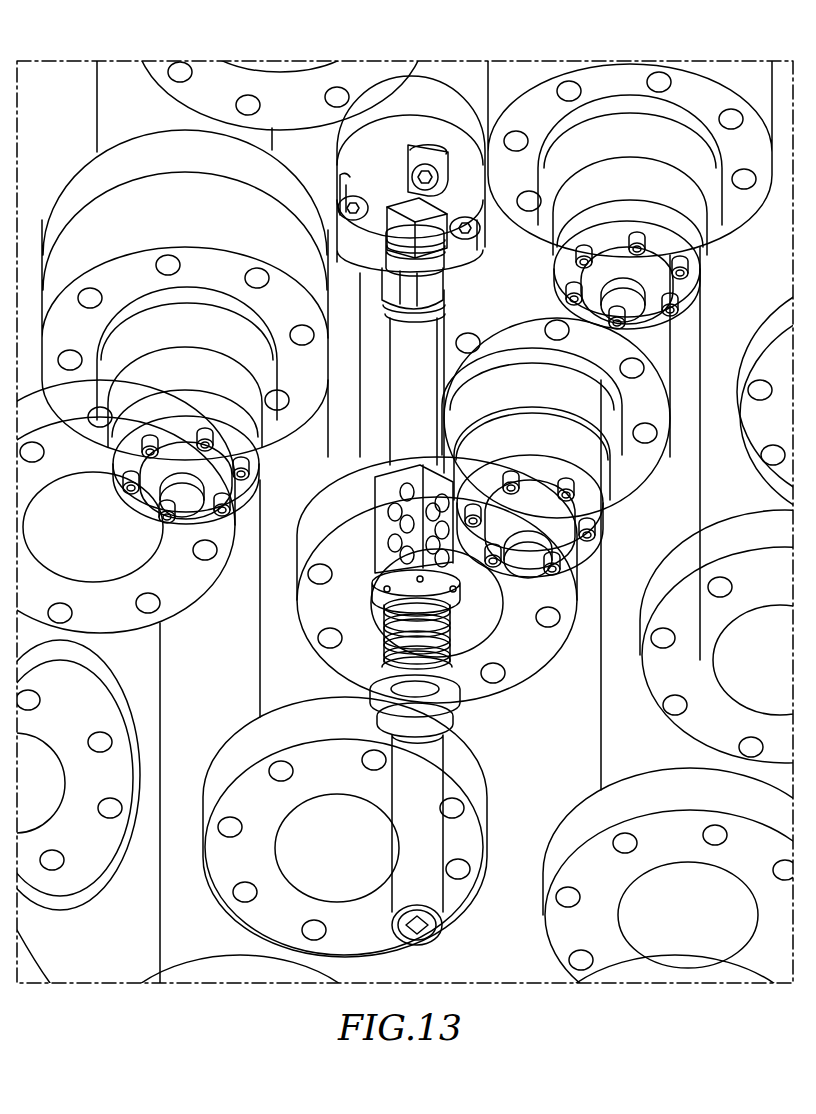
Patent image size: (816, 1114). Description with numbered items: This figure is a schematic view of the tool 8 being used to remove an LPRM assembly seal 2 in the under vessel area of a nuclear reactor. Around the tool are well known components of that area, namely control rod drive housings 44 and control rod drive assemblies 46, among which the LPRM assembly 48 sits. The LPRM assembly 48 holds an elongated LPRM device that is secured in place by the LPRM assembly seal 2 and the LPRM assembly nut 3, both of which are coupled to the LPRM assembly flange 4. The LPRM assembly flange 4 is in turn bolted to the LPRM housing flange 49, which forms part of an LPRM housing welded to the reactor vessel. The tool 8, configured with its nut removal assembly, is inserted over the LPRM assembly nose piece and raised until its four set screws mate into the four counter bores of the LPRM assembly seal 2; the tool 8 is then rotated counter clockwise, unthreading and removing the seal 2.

The LPRM assembly seal 2 is at (440, 270).
The LPRM assembly nut 3 is at (437, 217).
The LPRM assembly flange 4 is at (372, 187).
The tool 8 is at (462, 650).
The control rod drive housings 44 is at (337, 490).
The control rod drive assemblies 46 is at (580, 447).
The LPRM assembly 48 is at (412, 125).
The LPRM housing flange 49 is at (433, 87).